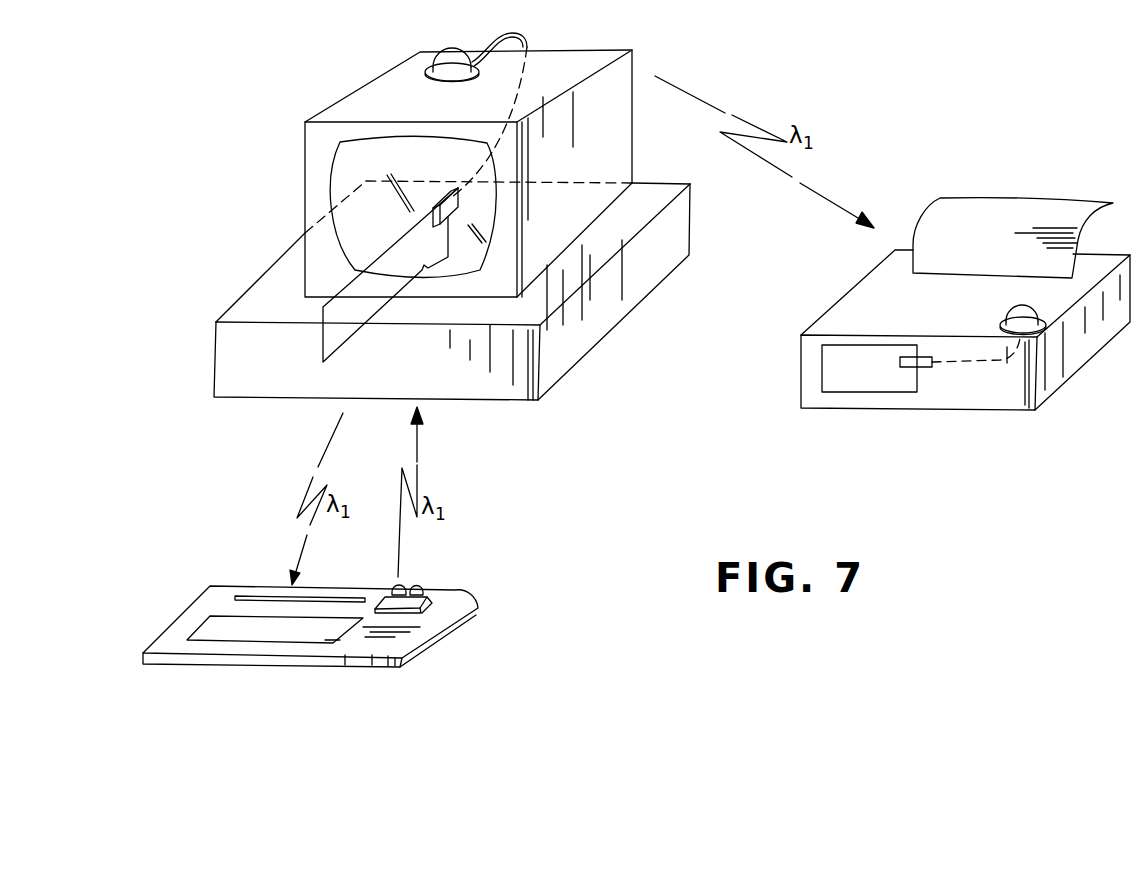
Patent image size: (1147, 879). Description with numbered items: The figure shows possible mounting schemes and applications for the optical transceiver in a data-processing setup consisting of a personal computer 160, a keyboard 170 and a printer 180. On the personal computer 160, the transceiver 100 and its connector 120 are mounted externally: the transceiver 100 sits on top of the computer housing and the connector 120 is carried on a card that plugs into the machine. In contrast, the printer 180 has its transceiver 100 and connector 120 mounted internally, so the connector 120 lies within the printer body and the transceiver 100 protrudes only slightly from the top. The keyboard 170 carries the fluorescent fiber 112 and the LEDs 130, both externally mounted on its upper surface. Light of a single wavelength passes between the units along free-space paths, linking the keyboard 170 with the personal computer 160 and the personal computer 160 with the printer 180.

The transceiver 100 is at (441, 52).
The fluorescent fiber 112 is at (248, 597).
The connector 120 is at (445, 212).
The LEDs 130 is at (422, 575).
The personal computer 160 is at (305, 157).
The keyboard 170 is at (448, 625).
The printer 180 is at (845, 293).